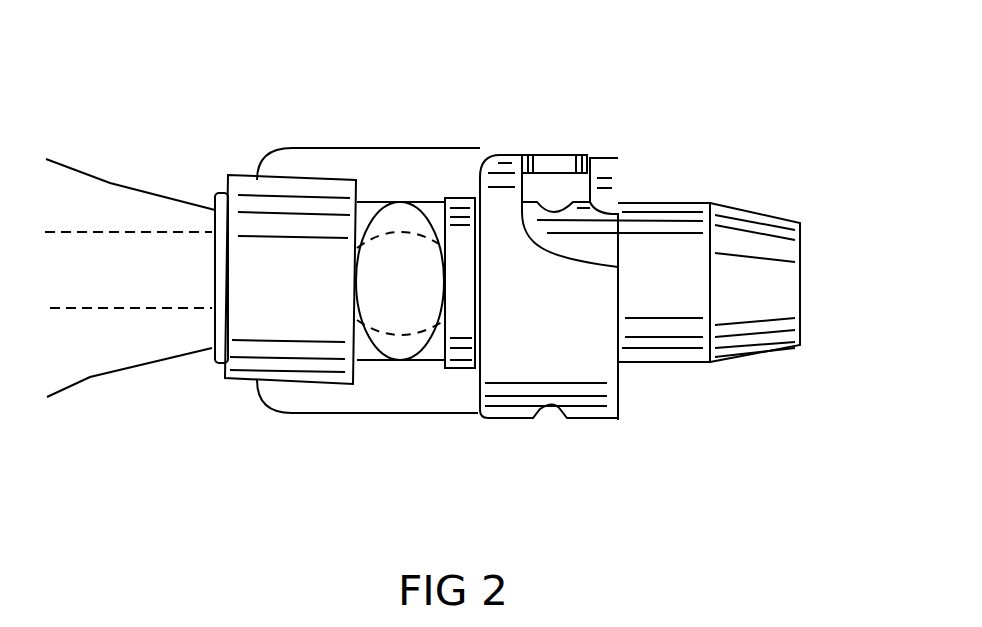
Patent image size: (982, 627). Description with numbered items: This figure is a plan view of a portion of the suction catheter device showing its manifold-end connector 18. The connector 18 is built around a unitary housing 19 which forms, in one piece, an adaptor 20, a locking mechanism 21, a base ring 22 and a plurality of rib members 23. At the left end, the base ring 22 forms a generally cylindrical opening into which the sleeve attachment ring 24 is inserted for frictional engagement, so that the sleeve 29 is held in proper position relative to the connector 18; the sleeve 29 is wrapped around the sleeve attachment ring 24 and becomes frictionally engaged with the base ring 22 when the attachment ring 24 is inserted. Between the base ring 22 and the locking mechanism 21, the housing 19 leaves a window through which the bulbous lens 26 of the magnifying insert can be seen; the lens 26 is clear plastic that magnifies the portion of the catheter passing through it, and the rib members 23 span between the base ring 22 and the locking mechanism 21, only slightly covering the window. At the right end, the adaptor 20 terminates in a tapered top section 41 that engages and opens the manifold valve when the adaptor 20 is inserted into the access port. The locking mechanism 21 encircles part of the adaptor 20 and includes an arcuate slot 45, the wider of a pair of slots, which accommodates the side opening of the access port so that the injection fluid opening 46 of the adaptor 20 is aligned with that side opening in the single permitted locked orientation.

The manifold-end connector 18 is at (492, 118).
The unitary housing 19 is at (468, 156).
The adaptor 20 is at (702, 178).
The locking mechanism 21 is at (618, 132).
The base ring 22 is at (295, 192).
The rib members 23 is at (378, 146).
The sleeve attachment ring 24 is at (212, 363).
The bulbous lens 26 is at (403, 328).
The sleeve 29 is at (185, 347).
The tapered top section 41 is at (763, 217).
The arcuate slot 45 is at (548, 162).
The injection fluid opening 46 is at (553, 210).